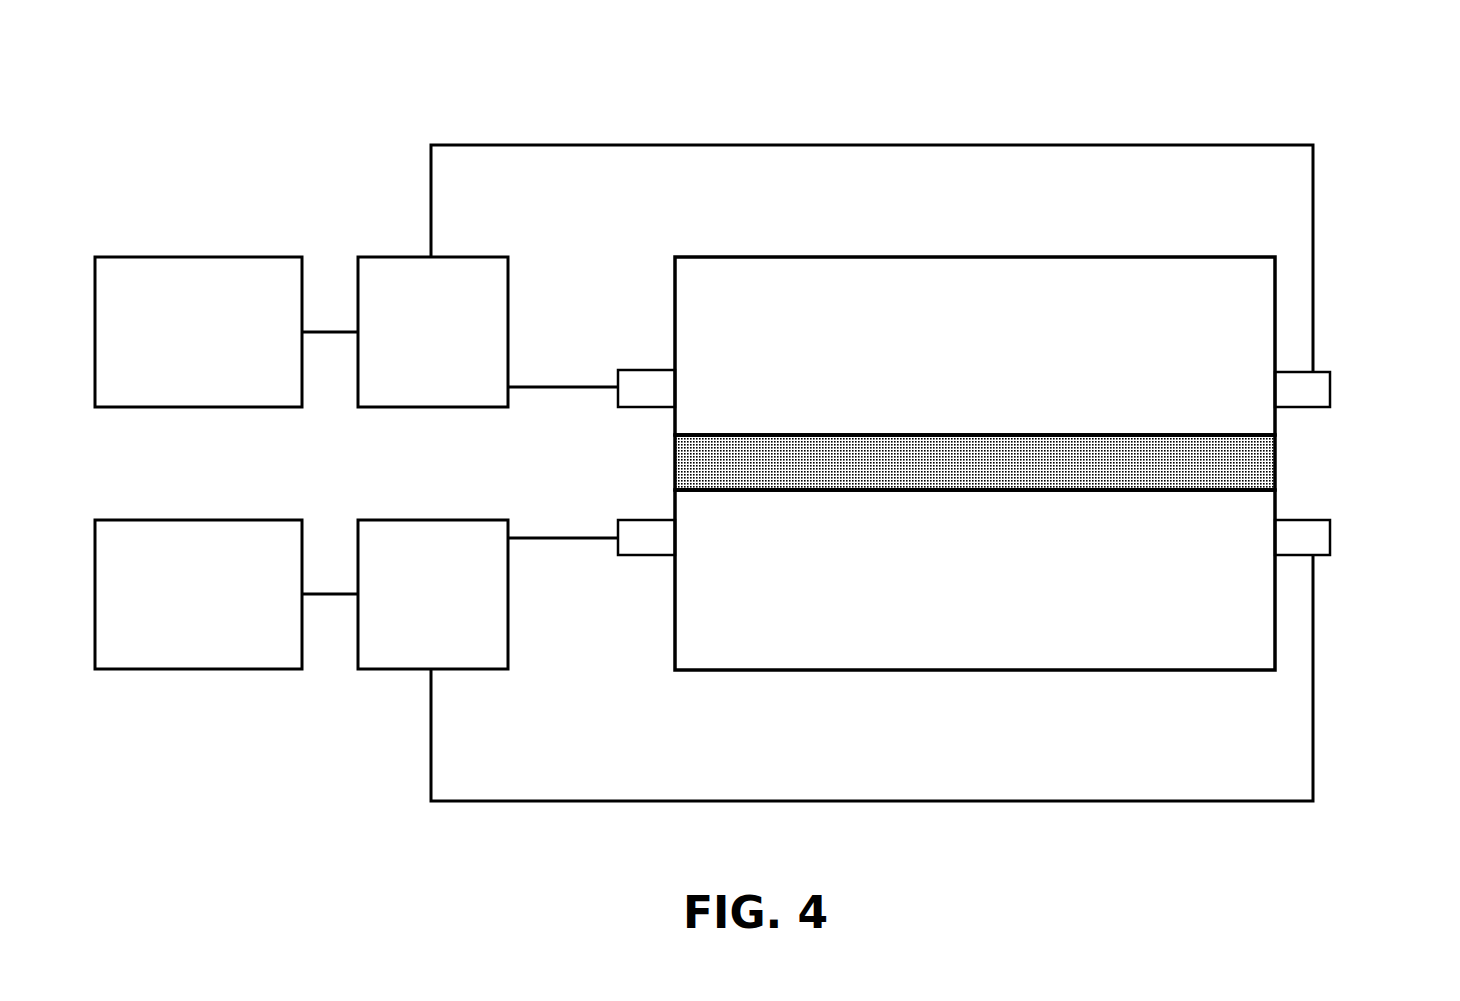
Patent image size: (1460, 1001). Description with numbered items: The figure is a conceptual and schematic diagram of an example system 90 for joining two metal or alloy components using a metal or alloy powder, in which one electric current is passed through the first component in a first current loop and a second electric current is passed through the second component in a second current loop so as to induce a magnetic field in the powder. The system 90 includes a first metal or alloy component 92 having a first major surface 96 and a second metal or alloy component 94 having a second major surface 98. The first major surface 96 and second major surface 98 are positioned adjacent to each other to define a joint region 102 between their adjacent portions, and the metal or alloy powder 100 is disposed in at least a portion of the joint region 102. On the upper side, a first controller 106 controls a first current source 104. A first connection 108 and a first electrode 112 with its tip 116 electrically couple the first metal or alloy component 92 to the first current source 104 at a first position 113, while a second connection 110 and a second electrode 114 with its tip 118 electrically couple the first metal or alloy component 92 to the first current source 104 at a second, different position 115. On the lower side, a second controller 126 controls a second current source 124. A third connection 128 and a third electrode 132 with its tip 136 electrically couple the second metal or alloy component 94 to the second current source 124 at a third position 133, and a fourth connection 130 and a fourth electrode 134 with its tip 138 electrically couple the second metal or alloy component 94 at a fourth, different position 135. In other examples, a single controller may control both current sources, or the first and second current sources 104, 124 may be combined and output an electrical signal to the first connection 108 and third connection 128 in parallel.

The system 90 is at (186, 80).
The first metal or alloy component 92 is at (805, 257).
The second metal or alloy component 94 is at (815, 670).
The first major surface 96 is at (976, 433).
The second major surface 98 is at (1097, 490).
The metal or alloy powder 100 is at (1270, 483).
The joint region 102 is at (1297, 446).
The first current source 104 is at (413, 374).
The first controller 106 is at (178, 361).
The first connection 108 is at (937, 145).
The second connection 110 is at (587, 387).
The first electrode 112 is at (1330, 385).
The first position 113 is at (1268, 388).
The second electrode 114 is at (645, 407).
The second position 115 is at (683, 384).
The tip 116 is at (1279, 371).
The tip 118 is at (672, 407).
The second current source 124 is at (413, 636).
The second controller 126 is at (178, 622).
The third connection 128 is at (937, 801).
The fourth connection 130 is at (588, 538).
The third electrode 132 is at (1330, 540).
The third position 133 is at (1270, 544).
The fourth electrode 134 is at (652, 520).
The fourth position 135 is at (684, 543).
The tip 136 is at (1280, 556).
The tip 138 is at (672, 520).